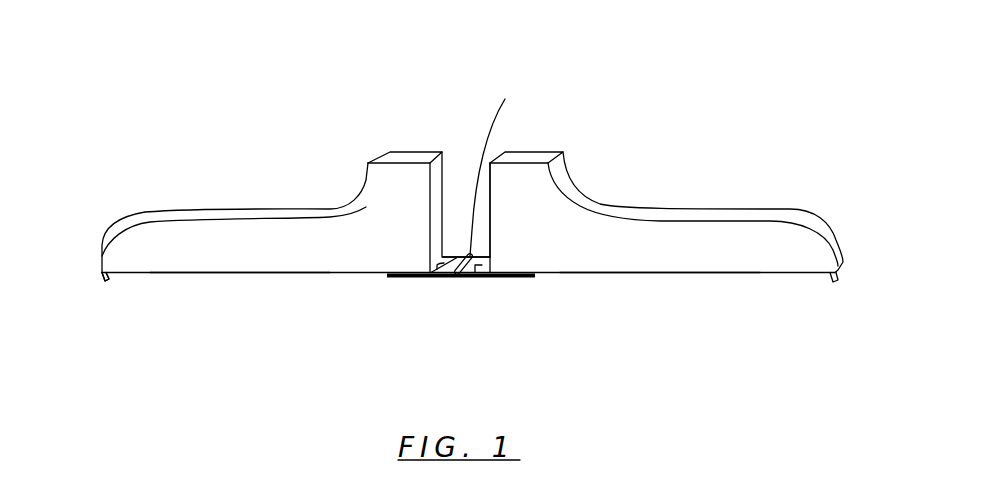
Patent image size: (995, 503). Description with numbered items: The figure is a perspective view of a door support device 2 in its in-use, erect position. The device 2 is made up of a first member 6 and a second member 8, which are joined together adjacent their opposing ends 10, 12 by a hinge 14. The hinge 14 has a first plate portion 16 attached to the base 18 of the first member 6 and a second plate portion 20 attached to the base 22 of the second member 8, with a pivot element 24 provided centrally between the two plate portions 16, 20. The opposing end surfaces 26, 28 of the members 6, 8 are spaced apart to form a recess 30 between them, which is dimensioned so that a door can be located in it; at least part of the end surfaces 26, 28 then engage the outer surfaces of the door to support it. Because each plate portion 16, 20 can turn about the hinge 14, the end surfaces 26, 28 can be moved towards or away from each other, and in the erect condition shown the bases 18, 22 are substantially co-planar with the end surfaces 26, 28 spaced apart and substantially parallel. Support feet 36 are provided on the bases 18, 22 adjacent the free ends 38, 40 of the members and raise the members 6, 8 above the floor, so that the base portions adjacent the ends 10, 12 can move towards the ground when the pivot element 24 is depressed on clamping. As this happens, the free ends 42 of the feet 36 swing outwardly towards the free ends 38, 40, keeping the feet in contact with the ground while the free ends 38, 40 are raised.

The door support device 2 is at (466, 201).
The first member 6 is at (429, 173).
The second member 8 is at (549, 173).
The end of first member 10 is at (424, 284).
The end of second member 12 is at (500, 286).
The hinge 14 is at (458, 290).
The first plate portion 16 is at (441, 276).
The base of first member 18 is at (338, 275).
The second plate portion 20 is at (477, 278).
The base of second member 22 is at (658, 275).
The pivot element 24 is at (498, 164).
The end surface of first member 26 is at (445, 168).
The end surface of second member 28 is at (488, 176).
The recess 30 is at (465, 156).
The support feet 36 is at (107, 280).
The free end of first member 38 is at (100, 257).
The free end of second member 40 is at (842, 250).
The free ends of feet 42 is at (100, 279).